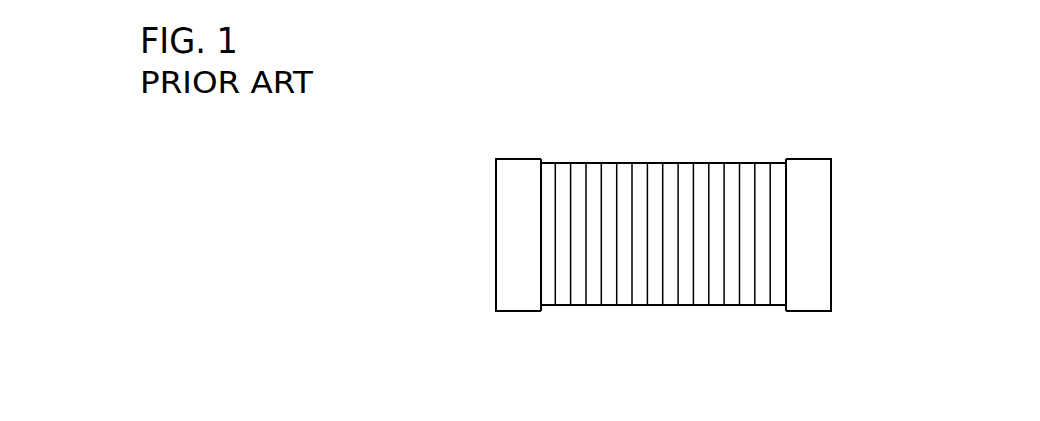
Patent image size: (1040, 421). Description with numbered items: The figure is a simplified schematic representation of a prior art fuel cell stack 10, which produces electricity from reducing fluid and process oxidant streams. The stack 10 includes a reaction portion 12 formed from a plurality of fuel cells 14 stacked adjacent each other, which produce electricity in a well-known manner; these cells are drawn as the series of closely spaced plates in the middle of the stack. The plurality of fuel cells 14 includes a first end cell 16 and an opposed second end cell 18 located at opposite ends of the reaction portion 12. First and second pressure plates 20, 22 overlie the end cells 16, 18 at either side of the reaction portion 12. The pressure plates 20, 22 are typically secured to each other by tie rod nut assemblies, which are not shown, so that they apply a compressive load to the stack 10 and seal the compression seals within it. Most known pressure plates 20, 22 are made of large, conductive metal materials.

The prior art fuel cell stack 10 is at (860, 138).
The reaction portion 12 is at (775, 324).
The fuel cells 14 is at (578, 168).
The first end cell 16 is at (550, 168).
The second end cell 18 is at (782, 168).
The first pressure plate 20 is at (510, 233).
The second pressure plate 22 is at (817, 206).